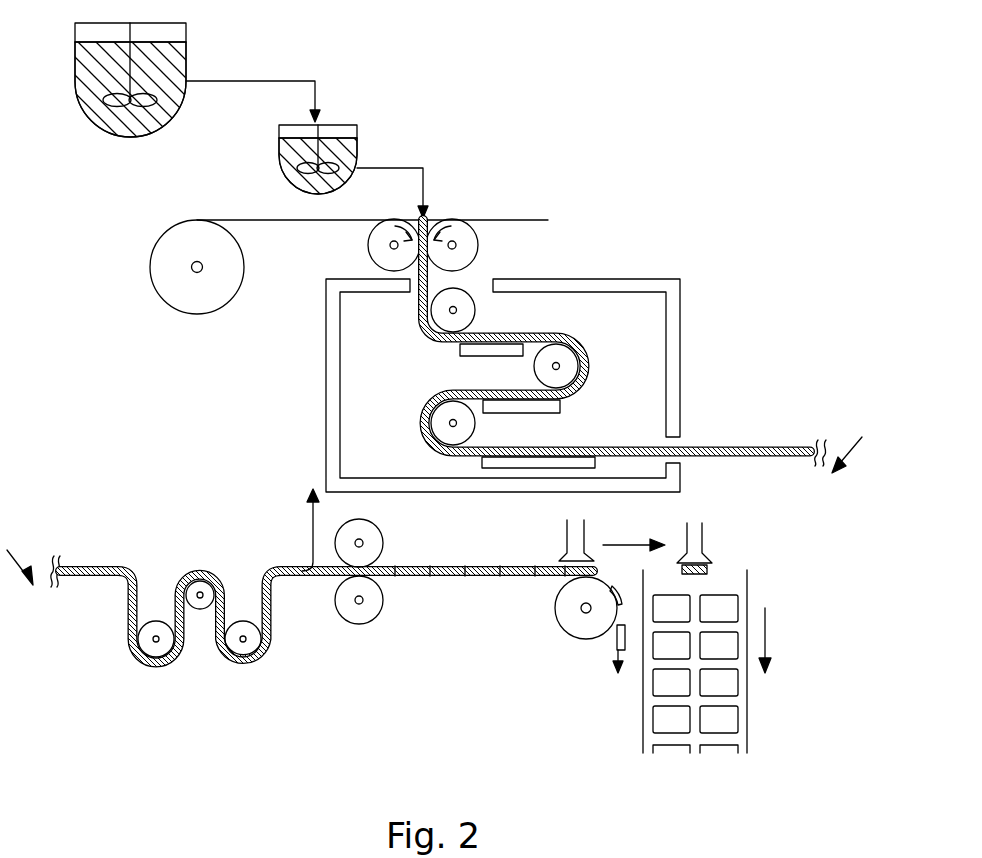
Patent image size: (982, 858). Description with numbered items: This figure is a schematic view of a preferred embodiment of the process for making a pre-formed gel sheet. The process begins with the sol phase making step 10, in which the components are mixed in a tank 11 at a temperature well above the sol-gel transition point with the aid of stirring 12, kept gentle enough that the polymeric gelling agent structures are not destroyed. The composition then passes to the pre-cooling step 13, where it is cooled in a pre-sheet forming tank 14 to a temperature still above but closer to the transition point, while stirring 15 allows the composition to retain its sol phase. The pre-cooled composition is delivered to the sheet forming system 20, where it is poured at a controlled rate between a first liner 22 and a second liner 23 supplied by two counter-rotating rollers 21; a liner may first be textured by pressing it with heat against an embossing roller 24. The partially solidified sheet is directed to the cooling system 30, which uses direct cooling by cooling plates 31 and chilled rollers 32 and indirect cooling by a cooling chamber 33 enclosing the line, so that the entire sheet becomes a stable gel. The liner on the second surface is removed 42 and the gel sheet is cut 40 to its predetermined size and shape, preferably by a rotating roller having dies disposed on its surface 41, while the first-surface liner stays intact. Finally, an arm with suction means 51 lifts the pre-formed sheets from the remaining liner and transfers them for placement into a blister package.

The sol phase making step 10 is at (86, 162).
The tank 11 is at (186, 55).
The stirring 12 is at (150, 108).
The pre-cooling step 13 is at (375, 90).
The pre-sheet forming tank 14 is at (357, 150).
The stirring 15 is at (336, 176).
The sheet forming system 20 is at (503, 148).
The counter-rotating rollers 21 is at (370, 248).
The first liner 22 is at (332, 220).
The second liner 23 is at (526, 220).
The embossing roller 24 is at (151, 268).
The cooling system 30 is at (726, 366).
The cooling plates 31 is at (460, 350).
The chilled rollers 32 is at (472, 316).
The cooling chamber 33 is at (676, 311).
The cutting step 40 is at (350, 650).
The roller having dies disposed on the surface 41 is at (375, 545).
The liner removal 42 is at (313, 521).
The arm with suction means 51 is at (574, 533).